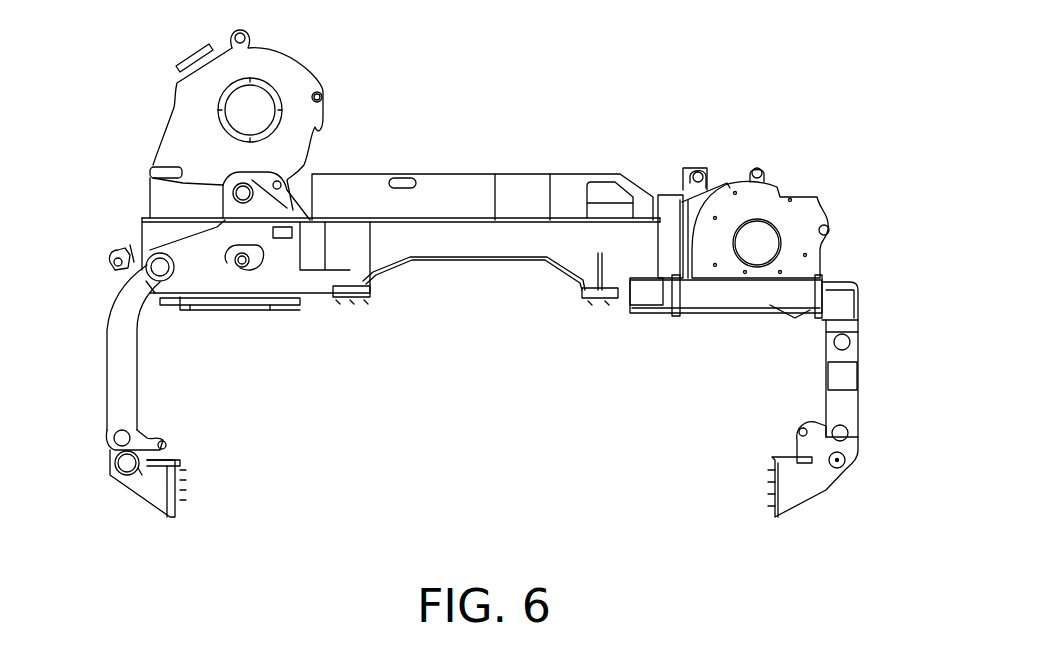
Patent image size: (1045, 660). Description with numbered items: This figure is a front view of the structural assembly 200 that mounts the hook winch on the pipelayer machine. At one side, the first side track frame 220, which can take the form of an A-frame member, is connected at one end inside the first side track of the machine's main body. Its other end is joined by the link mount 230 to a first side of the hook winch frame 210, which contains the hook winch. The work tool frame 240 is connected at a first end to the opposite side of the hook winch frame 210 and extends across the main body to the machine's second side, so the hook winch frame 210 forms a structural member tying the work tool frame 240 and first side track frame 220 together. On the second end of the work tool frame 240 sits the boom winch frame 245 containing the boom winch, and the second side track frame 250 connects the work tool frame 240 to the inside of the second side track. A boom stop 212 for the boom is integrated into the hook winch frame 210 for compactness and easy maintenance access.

The structural assembly 200 is at (748, 70).
The hook winch frame 210 is at (785, 205).
The boom stop 212 is at (860, 332).
The first side track frame 220 is at (858, 388).
The link mount 230 is at (842, 297).
The work tool frame 240 is at (452, 243).
The boom winch frame 245 is at (263, 63).
The second side track frame 250 is at (122, 357).